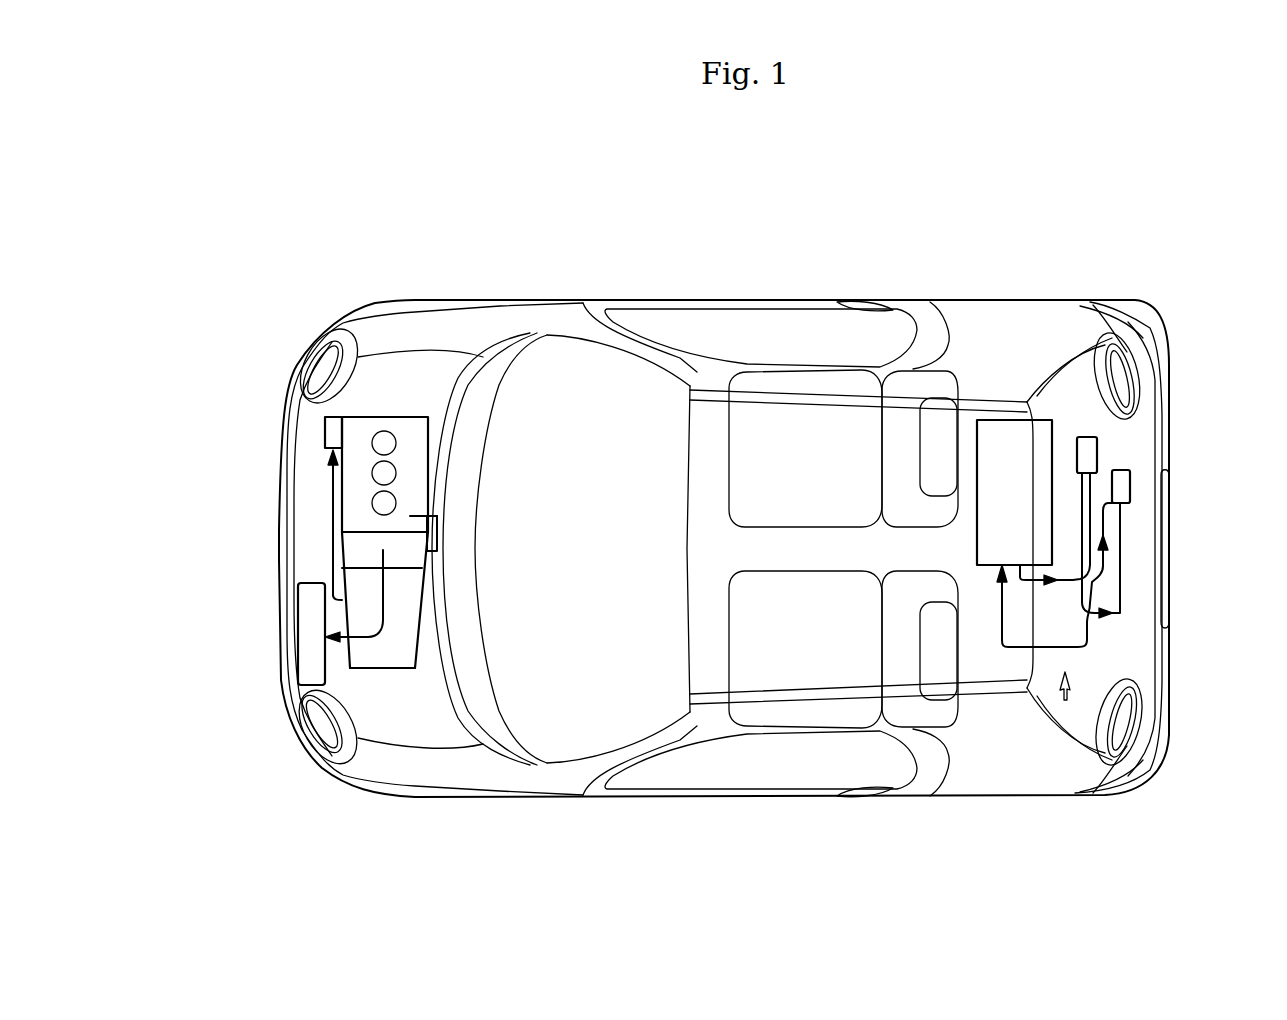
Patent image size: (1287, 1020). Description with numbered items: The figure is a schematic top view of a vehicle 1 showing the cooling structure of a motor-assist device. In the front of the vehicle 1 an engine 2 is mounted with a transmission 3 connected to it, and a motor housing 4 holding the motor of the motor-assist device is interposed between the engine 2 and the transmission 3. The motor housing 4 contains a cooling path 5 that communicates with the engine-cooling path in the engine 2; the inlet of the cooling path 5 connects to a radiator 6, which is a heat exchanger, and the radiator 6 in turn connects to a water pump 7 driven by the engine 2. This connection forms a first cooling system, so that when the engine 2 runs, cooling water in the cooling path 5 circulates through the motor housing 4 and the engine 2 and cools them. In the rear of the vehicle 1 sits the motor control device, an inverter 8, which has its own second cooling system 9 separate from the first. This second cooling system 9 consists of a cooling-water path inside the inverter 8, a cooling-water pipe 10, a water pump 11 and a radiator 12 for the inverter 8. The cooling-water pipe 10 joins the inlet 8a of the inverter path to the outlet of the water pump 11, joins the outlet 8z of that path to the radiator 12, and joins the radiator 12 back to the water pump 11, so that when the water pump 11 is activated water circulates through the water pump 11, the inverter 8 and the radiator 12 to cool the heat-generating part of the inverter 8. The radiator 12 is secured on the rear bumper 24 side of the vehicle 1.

The vehicle 1 is at (657, 298).
The engine 2 is at (380, 418).
The transmission 3 is at (385, 672).
The motor housing 4 is at (355, 553).
The cooling path 5 is at (438, 537).
The radiator 6 is at (308, 622).
The water pump 7 is at (328, 432).
The inverter 8 is at (1005, 440).
The inlet of the cooling-water path 8a is at (997, 655).
The outlet of the cooling-water path 8z is at (1030, 655).
The second cooling system 9 is at (1063, 705).
The cooling-water pipe 10 is at (1090, 638).
The water pump 11 is at (1090, 452).
The radiator 12 is at (1130, 480).
The rear bumper 24 is at (1168, 632).